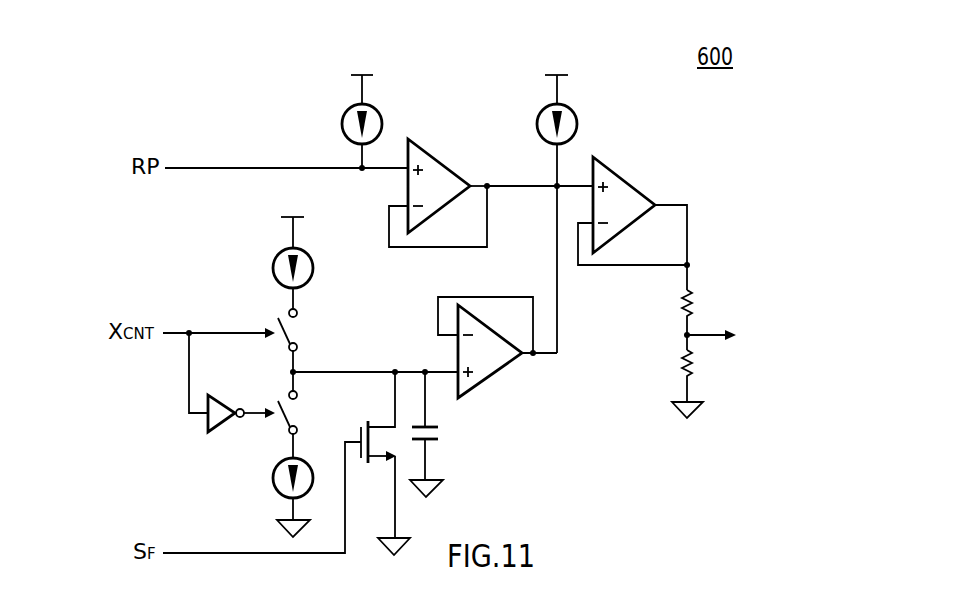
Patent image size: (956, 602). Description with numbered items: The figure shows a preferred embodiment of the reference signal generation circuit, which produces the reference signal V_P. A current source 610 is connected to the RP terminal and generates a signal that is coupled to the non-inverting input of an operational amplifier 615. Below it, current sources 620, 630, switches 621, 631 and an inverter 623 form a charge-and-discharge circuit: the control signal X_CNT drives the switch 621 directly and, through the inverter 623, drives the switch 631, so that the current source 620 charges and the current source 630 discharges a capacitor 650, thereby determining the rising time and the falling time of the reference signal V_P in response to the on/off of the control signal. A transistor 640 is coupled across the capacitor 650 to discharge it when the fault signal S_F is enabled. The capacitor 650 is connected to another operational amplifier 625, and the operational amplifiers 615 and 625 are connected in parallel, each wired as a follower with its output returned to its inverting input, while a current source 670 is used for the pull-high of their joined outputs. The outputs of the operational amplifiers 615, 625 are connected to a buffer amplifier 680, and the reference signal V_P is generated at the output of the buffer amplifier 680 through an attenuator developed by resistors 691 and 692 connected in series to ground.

The current source 610 is at (341, 121).
The operational amplifier 615 is at (414, 141).
The current source 620 is at (272, 254).
The switch 621 is at (313, 333).
The inverter 623 is at (225, 429).
The operational amplifier 625 is at (508, 367).
The current source 630 is at (272, 464).
The switch 631 is at (313, 411).
The transistor 640 is at (383, 462).
The capacitor 650 is at (444, 432).
The current source 670 is at (534, 120).
The buffer amplifier 680 is at (601, 164).
The resistor 691 is at (677, 298).
The resistor 692 is at (677, 363).